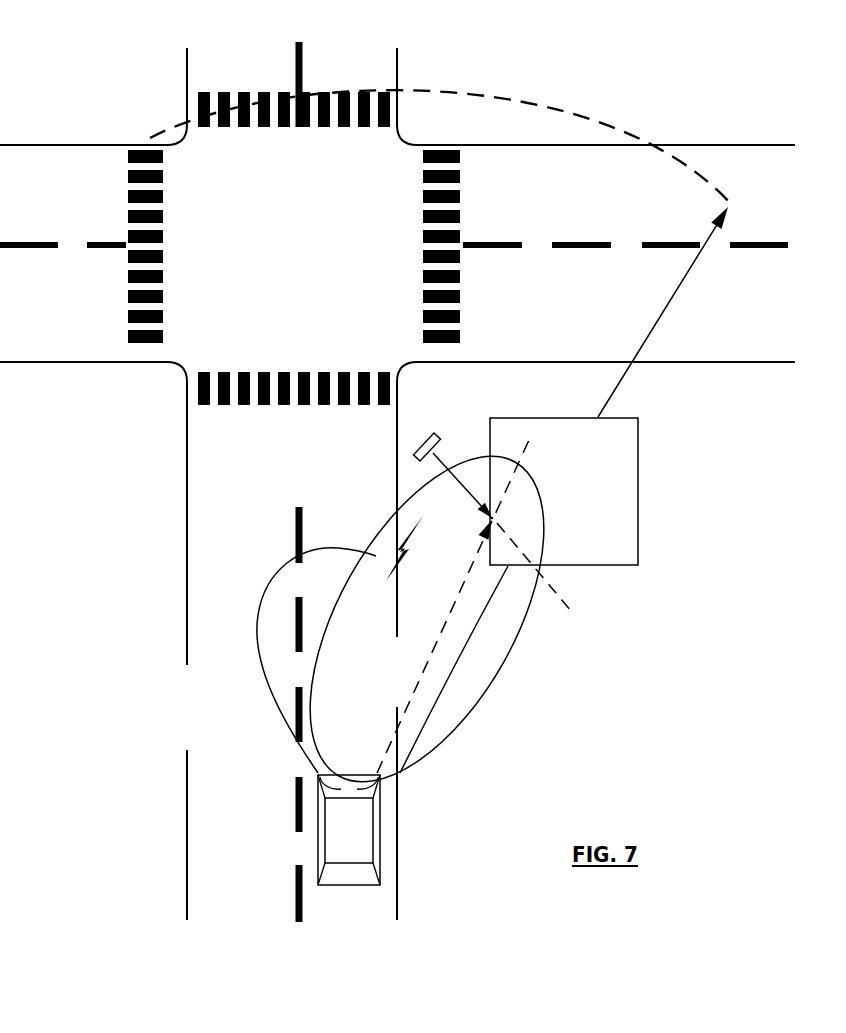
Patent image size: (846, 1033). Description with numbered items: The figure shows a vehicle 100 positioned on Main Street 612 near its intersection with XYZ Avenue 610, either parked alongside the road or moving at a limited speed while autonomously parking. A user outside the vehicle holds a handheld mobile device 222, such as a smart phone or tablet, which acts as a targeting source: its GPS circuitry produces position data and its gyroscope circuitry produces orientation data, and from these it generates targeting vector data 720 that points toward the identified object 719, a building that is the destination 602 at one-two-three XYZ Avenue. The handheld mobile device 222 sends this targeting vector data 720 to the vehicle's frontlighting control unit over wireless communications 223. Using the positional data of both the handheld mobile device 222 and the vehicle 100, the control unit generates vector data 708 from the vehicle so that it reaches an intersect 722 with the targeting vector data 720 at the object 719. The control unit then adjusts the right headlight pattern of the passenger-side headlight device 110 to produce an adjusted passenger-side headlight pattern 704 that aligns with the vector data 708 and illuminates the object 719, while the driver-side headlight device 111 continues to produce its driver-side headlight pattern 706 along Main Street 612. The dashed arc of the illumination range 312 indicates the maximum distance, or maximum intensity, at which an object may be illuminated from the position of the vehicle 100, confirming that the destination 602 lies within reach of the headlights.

The vehicle 100 is at (368, 838).
The headlight device 110 is at (368, 793).
The headlight device 111 is at (331, 792).
The handheld mobile device 222 is at (414, 436).
The wireless communications 223 is at (412, 537).
The illumination range 312 is at (672, 300).
The destination 602 is at (660, 491).
The XYZ Avenue 610 is at (635, 356).
The Main Street 612 is at (218, 533).
The adjusted passenger-side headlight pattern 704 is at (500, 672).
The driver-side headlight pattern 706 is at (288, 713).
The vector data 708 is at (452, 606).
The object 719 is at (630, 556).
The targeting vector data 720 is at (450, 452).
The intersect 722 is at (519, 520).